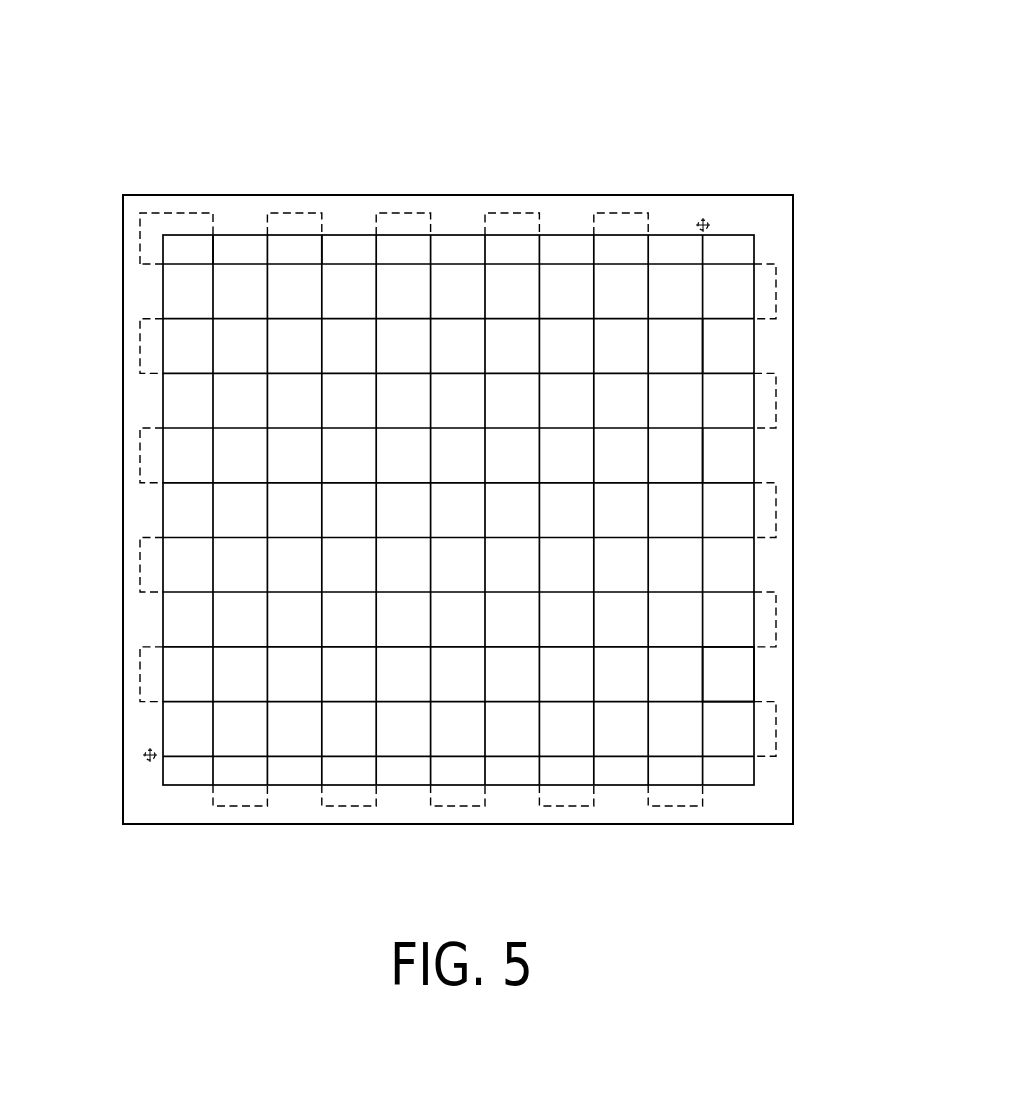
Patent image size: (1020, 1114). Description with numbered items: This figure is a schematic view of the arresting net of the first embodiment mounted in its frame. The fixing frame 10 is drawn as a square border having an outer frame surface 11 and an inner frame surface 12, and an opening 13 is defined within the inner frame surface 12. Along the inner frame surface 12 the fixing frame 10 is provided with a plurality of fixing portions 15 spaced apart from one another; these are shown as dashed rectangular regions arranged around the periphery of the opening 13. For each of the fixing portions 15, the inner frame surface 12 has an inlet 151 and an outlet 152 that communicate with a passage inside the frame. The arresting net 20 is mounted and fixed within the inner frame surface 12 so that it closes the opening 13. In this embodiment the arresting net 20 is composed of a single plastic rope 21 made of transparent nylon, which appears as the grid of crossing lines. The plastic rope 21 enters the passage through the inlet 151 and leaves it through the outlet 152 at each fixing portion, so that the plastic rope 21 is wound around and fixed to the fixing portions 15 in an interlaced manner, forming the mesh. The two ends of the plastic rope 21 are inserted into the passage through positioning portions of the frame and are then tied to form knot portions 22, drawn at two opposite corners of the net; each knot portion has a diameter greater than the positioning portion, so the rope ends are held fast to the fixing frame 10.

The fixing frame 10 is at (614, 196).
The outer frame surface 11 is at (500, 195).
The inner frame surface 12 is at (754, 562).
The opening 13 is at (733, 677).
The fixing portions 15 is at (293, 222).
The inlet 151 is at (267, 235).
The outlet 152 is at (322, 235).
The arresting net 20 is at (704, 458).
The plastic rope 21 is at (705, 345).
The knot portions 22 is at (703, 220).